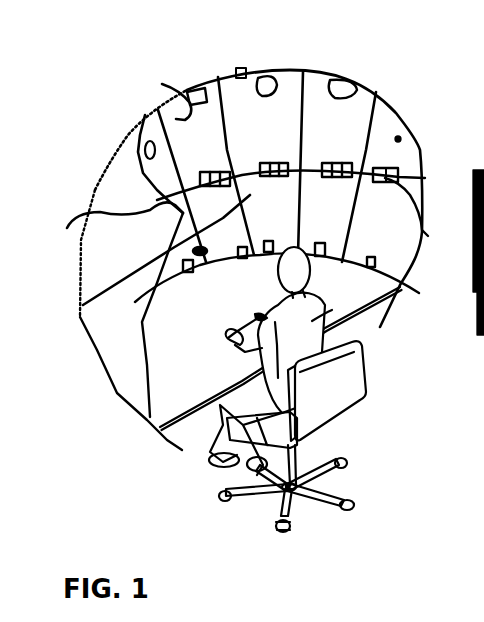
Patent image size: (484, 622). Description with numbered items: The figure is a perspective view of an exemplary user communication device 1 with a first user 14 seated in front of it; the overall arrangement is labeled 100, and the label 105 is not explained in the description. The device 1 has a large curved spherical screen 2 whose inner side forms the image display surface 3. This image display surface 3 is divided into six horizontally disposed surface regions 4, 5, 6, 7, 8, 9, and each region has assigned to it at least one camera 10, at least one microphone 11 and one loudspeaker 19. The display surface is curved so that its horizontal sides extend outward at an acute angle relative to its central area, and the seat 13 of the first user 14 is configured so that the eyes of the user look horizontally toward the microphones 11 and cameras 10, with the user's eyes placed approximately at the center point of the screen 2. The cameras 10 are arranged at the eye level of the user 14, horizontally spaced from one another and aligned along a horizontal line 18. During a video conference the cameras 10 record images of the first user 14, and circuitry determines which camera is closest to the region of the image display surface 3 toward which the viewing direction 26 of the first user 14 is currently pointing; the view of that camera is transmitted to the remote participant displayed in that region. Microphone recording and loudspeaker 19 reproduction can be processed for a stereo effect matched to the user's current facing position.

The workstation system 100 is at (432, 175).
The user communication device 1 is at (396, 112).
The curved spherical screen 2 is at (242, 76).
The image display surface 3 is at (157, 91).
The surface region 4 is at (392, 98).
The surface region 5 is at (338, 90).
The surface region 6 is at (266, 90).
The surface region 7 is at (200, 92).
The surface region 8 is at (152, 163).
The surface region 9 is at (116, 224).
The camera 10 is at (392, 155).
The microphone 11 is at (424, 223).
The seat 13 is at (343, 391).
The first user 14 is at (312, 322).
The horizontal line 18 is at (82, 325).
The loudspeaker 19 is at (398, 173).
The viewing direction 26 is at (247, 258).
The desk back edge 105 is at (405, 293).